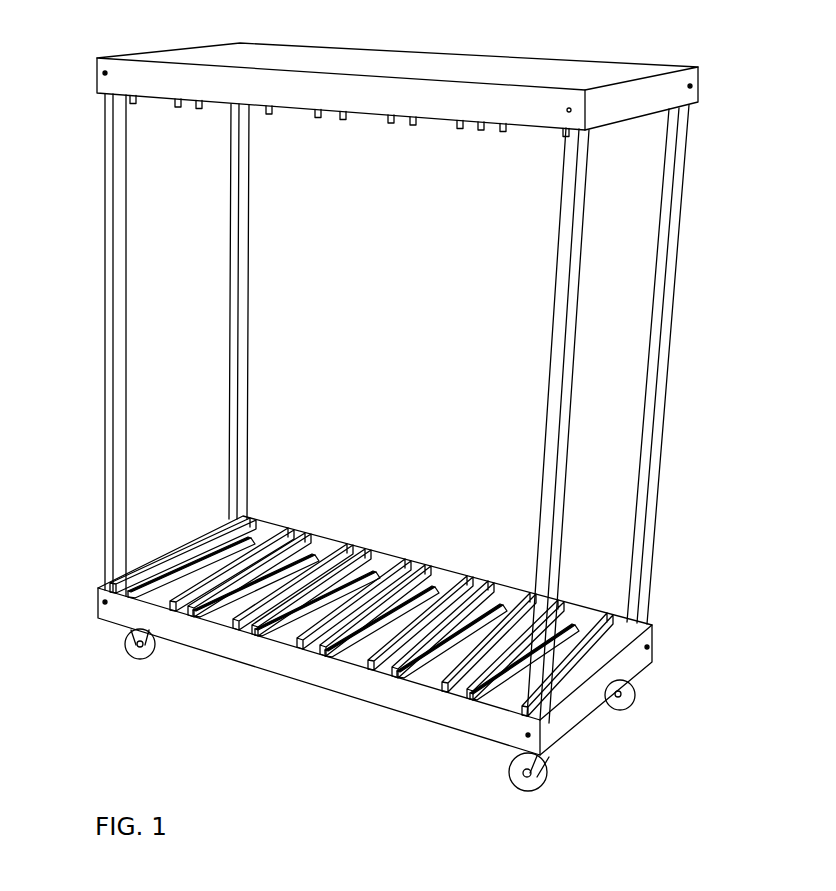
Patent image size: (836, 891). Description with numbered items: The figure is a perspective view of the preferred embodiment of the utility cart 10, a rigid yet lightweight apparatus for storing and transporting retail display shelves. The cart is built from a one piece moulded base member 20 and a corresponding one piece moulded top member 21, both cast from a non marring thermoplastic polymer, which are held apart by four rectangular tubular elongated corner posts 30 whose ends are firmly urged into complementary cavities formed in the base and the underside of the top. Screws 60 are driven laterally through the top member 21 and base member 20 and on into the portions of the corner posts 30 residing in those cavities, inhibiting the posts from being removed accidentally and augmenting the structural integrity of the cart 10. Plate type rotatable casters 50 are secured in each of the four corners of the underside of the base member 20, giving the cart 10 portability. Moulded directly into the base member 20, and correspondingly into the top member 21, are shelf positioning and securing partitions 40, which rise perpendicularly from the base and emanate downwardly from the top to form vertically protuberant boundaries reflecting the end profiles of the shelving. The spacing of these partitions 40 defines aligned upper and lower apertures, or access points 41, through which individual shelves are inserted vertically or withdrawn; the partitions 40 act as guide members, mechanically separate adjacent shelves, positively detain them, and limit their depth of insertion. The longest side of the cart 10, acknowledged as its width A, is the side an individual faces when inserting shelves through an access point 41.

The utility cart 10 is at (92, 242).
The base member 20 is at (382, 690).
The top member 21 is at (490, 64).
The rectangular tubular elongated corner post 30 is at (105, 331).
The shelf positioning and securing partition 40 is at (272, 130).
The access point 41 is at (466, 128).
The rotatable caster 50 is at (125, 653).
The screw 60 is at (105, 73).
The width of the device A is at (412, 560).